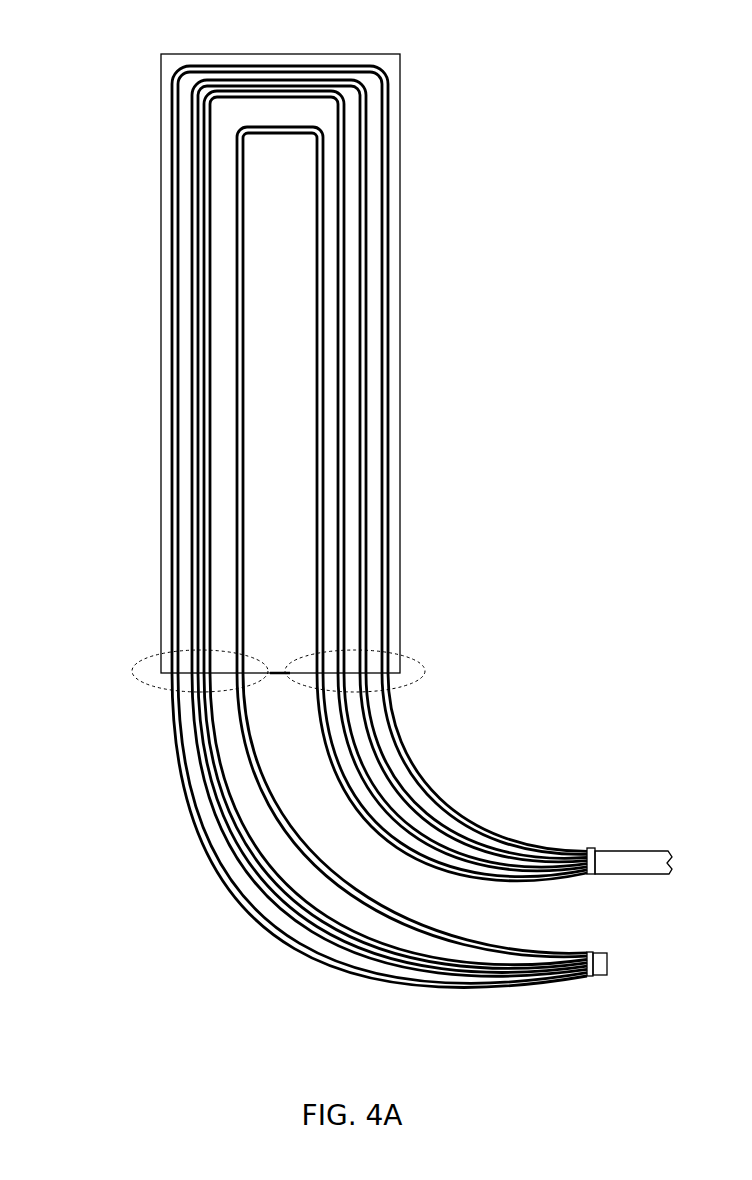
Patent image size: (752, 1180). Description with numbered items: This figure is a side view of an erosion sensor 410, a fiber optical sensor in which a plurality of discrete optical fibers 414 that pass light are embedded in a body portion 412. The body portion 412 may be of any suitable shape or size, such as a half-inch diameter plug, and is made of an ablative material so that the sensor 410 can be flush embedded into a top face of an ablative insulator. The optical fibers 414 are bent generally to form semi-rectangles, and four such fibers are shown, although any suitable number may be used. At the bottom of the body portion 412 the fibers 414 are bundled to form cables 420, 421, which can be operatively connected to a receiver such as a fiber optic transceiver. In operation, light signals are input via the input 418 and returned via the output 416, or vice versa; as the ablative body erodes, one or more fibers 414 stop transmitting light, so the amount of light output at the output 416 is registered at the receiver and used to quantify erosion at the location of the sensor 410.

The erosion sensor 410 is at (480, 163).
The body portion 412 is at (160, 183).
The optical fibers 414 is at (175, 775).
The output 416 is at (155, 652).
The input 418 is at (375, 653).
The cable 420 is at (640, 848).
The cable 421 is at (607, 973).